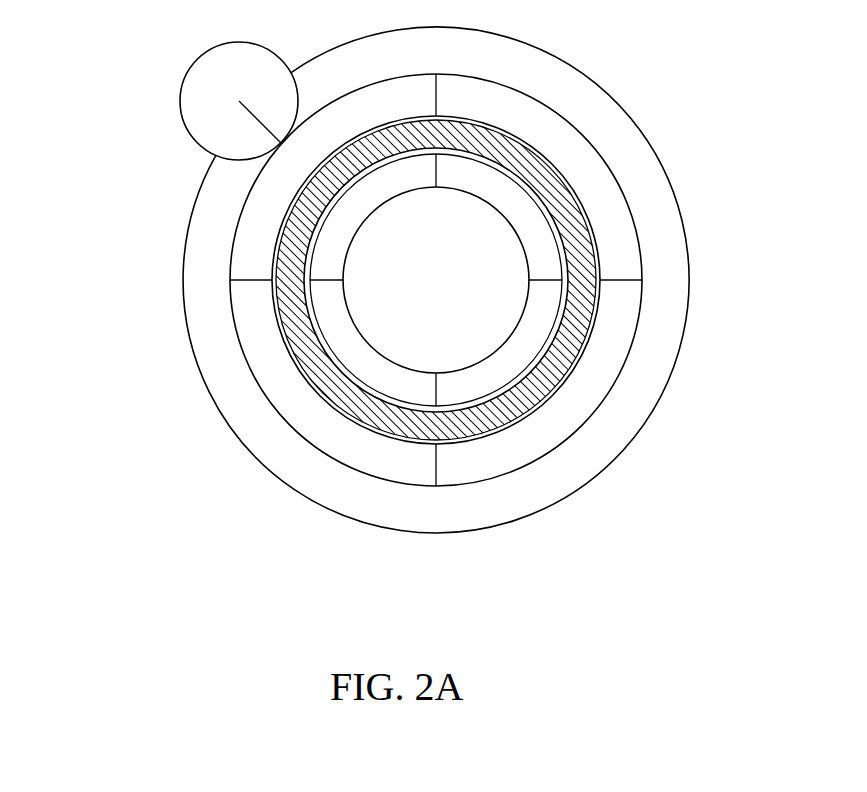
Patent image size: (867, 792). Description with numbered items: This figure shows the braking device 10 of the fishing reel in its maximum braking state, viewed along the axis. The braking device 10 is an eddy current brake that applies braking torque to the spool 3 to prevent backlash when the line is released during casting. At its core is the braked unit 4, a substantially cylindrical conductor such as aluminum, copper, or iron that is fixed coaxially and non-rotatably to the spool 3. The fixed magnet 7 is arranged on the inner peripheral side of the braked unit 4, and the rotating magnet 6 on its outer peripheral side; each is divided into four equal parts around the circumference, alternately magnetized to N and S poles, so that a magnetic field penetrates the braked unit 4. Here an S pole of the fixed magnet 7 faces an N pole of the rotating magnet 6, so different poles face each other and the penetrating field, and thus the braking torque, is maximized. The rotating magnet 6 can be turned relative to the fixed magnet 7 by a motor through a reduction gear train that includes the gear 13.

The braking device 10 is at (710, 58).
The spool 3 is at (620, 432).
The rotating magnet 6 is at (250, 262).
The braked unit 4 is at (595, 288).
The fixed magnet 7 is at (337, 320).
The gear 13 is at (200, 97).